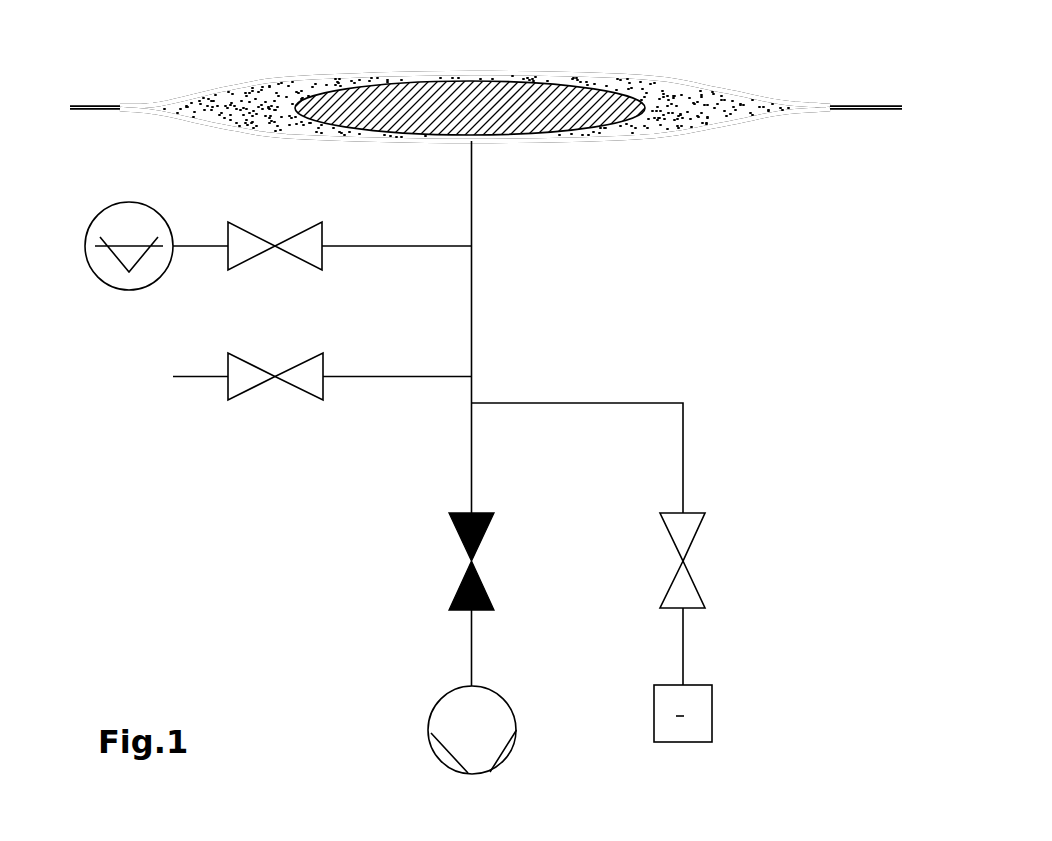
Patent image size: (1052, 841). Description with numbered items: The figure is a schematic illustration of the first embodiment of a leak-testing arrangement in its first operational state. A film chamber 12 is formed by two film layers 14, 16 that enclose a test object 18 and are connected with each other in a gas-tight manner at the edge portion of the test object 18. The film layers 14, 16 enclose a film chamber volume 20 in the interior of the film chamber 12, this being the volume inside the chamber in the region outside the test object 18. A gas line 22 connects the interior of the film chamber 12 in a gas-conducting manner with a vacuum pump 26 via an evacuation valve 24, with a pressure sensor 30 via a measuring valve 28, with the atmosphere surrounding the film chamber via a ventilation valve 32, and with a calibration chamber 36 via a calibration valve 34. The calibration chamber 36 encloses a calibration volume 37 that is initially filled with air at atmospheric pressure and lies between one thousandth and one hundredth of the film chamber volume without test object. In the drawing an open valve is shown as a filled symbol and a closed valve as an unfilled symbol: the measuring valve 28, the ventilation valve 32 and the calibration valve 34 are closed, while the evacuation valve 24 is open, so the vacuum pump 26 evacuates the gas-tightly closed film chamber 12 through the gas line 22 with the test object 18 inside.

The film chamber 12 is at (488, 129).
The film layer 14 is at (740, 93).
The film layer 16 is at (757, 117).
The test object 18 is at (547, 103).
The film chamber volume 20 is at (240, 110).
The gas line 22 is at (471, 186).
The evacuation valve 24 is at (433, 560).
The vacuum pump 26 is at (452, 710).
The measuring valve 28 is at (268, 206).
The pressure sensor 30 is at (116, 214).
The ventilation valve 32 is at (274, 400).
The calibration valve 34 is at (748, 565).
The calibration chamber 36 is at (712, 708).
The calibration volume 37 is at (680, 718).